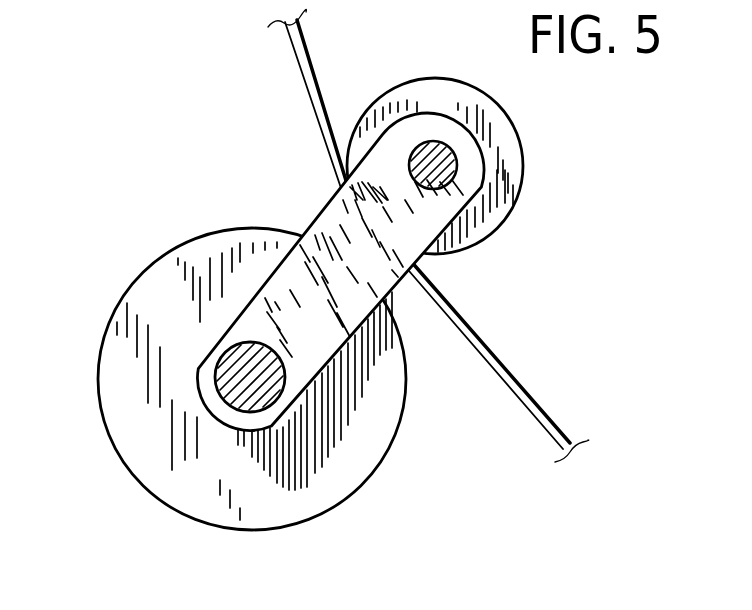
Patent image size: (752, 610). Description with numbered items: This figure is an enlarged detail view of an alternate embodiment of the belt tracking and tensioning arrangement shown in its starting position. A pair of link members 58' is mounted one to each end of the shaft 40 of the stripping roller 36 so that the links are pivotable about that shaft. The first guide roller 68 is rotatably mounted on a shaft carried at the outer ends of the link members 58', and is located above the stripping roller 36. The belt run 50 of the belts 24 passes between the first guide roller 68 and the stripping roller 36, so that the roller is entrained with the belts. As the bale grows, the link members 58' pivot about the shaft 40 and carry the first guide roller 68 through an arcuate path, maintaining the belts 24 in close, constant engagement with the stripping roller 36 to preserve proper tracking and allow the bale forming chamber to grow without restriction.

The belts 24 is at (307, 90).
The stripping roller 36 is at (110, 448).
The shaft of stripping roller 40 is at (227, 418).
The belt run 50 is at (555, 423).
The link members 58' is at (319, 271).
The first guide roller 68 is at (497, 225).